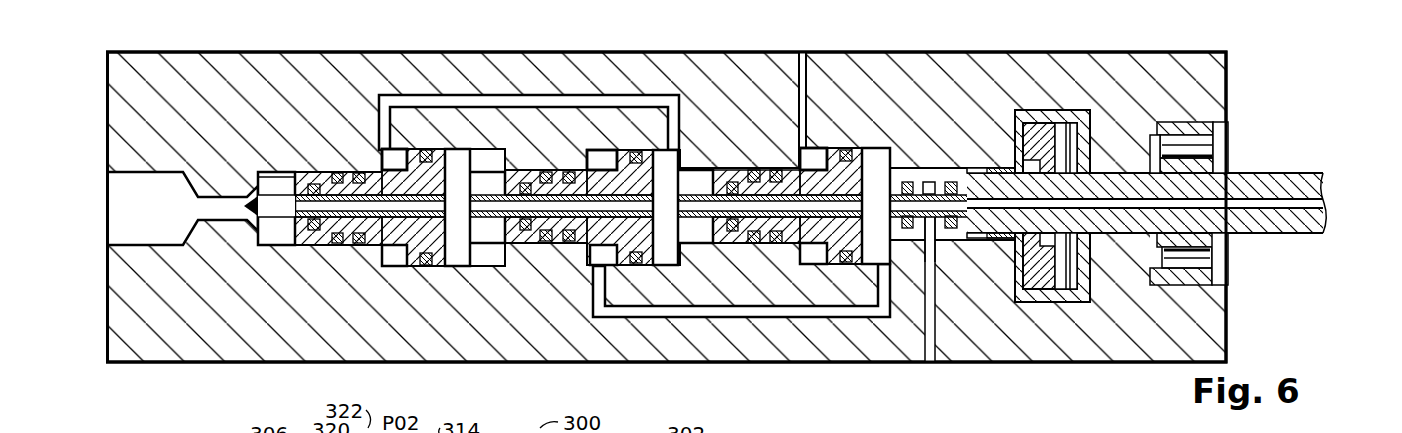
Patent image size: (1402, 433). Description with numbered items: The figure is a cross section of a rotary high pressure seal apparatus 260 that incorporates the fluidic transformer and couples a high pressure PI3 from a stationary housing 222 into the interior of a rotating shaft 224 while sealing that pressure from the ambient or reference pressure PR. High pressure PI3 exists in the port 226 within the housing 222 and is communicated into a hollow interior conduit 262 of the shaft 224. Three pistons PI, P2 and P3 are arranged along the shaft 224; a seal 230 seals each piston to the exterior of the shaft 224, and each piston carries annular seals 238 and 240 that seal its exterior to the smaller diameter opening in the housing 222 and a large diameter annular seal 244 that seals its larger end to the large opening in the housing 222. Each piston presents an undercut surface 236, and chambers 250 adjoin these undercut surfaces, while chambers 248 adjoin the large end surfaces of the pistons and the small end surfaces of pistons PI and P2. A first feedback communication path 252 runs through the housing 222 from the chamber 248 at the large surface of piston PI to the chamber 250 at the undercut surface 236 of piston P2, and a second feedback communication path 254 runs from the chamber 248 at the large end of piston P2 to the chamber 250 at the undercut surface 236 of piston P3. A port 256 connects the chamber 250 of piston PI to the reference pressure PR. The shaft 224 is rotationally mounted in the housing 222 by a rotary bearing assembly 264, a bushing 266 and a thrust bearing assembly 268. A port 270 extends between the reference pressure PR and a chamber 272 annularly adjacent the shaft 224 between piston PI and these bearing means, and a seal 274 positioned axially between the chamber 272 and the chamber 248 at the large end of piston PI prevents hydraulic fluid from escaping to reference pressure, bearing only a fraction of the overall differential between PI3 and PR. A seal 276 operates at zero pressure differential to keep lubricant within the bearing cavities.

The housing 222 is at (265, 52).
The shaft 224 is at (1268, 236).
The port 226 is at (113, 182).
The seal 230 is at (302, 172).
The undercut surface 236 is at (292, 178).
The annular seal 238 is at (338, 244).
The annular seal 240 is at (358, 246).
The large diameter annular seal 244 is at (636, 155).
The chamber 248 is at (457, 160).
The chamber 250 is at (380, 150).
The first feedback communication path 252 is at (727, 315).
The second feedback communication path 254 is at (521, 93).
The port 256 is at (820, 58).
The apparatus 260 is at (1210, 33).
The hollow interior conduit 262 is at (250, 218).
The rotary bearing assembly 264 is at (1230, 150).
The bushing 266 is at (1002, 168).
The thrust bearing assembly 268 is at (1066, 112).
The port 270 is at (933, 320).
The chamber 272 is at (937, 222).
The seal 274 is at (909, 182).
The seal 276 is at (988, 168).
The high pressure PI3 is at (130, 199).
The reference pressure PR is at (805, 52).
The piston PI is at (797, 163).
The piston P2 is at (591, 152).
The piston P3 is at (417, 149).